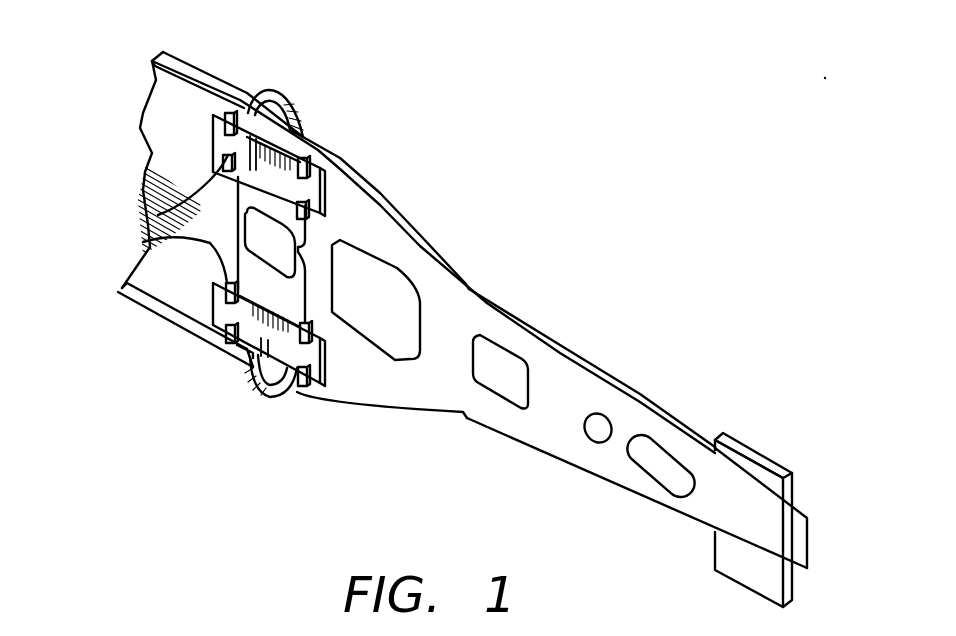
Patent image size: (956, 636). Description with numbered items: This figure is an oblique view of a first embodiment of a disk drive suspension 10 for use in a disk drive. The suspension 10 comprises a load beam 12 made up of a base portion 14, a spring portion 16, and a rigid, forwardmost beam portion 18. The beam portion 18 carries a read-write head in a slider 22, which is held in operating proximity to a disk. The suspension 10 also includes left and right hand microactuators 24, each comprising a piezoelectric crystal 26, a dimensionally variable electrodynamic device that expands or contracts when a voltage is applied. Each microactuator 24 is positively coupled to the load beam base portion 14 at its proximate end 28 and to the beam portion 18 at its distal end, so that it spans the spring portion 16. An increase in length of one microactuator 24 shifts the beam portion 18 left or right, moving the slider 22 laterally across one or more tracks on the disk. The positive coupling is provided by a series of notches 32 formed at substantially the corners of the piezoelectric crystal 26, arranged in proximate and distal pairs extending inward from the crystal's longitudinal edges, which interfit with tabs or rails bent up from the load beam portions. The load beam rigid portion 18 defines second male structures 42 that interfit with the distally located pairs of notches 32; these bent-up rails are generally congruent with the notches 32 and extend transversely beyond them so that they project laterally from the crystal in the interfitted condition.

The disk drive suspension 10 is at (106, 126).
The load beam 12 is at (434, 240).
The base portion 14 is at (190, 312).
The spring portion 16 is at (269, 418).
The beam portion 18 is at (647, 500).
The slider 22 is at (768, 458).
The microactuator 24 is at (250, 367).
The piezoelectric crystal 26 is at (248, 110).
The proximate end 28 is at (250, 142).
The notch 32 is at (305, 157).
The second male structure 42 is at (300, 203).